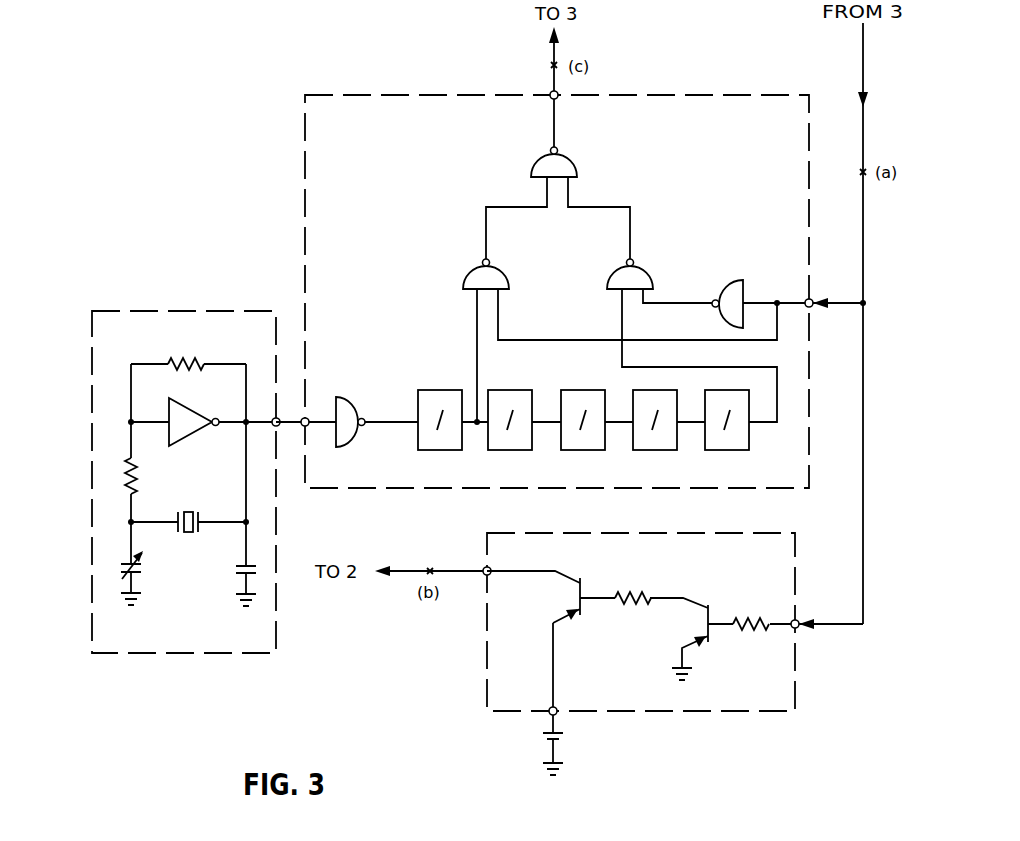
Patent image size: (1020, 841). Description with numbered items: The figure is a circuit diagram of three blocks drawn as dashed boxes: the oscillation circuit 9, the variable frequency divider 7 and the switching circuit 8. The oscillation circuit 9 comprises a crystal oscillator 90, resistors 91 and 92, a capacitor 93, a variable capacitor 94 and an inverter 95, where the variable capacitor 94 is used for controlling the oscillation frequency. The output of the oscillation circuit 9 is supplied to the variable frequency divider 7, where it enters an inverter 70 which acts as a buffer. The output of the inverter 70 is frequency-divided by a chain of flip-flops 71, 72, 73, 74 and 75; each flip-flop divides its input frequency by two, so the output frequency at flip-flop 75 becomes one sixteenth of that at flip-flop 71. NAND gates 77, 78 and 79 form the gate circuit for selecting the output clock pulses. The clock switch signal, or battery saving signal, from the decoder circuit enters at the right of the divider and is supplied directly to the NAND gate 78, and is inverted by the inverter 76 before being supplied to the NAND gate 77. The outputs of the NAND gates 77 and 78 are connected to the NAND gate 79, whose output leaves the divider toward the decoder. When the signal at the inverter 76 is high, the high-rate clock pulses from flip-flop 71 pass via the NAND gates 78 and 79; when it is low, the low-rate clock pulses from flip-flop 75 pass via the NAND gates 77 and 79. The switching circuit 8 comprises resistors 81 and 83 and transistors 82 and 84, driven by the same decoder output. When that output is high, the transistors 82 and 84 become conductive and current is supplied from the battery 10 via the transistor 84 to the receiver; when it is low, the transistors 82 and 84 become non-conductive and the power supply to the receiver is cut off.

The variable frequency divider 7 is at (330, 95).
The switching circuit 8 is at (799, 533).
The oscillation circuit 9 is at (113, 311).
The battery 10 is at (566, 737).
The inverter 70 is at (343, 399).
The flip-flop 71 is at (447, 452).
The flip-flop 72 is at (517, 452).
The flip-flop 73 is at (590, 452).
The flip-flop 74 is at (662, 452).
The flip-flop 75 is at (734, 452).
The inverter 76 is at (722, 290).
The NAND gate 77 is at (637, 268).
The NAND gate 78 is at (473, 268).
The NAND gate 79 is at (576, 152).
The resistor 81 is at (745, 617).
The transistor 82 is at (706, 641).
The resistor 83 is at (627, 584).
The transistor 84 is at (569, 590).
The crystal oscillator 90 is at (194, 511).
The resistor 91 is at (190, 359).
The resistor 92 is at (138, 479).
The capacitor 93 is at (240, 576).
The variable capacitor 94 is at (147, 567).
The inverter 95 is at (190, 402).